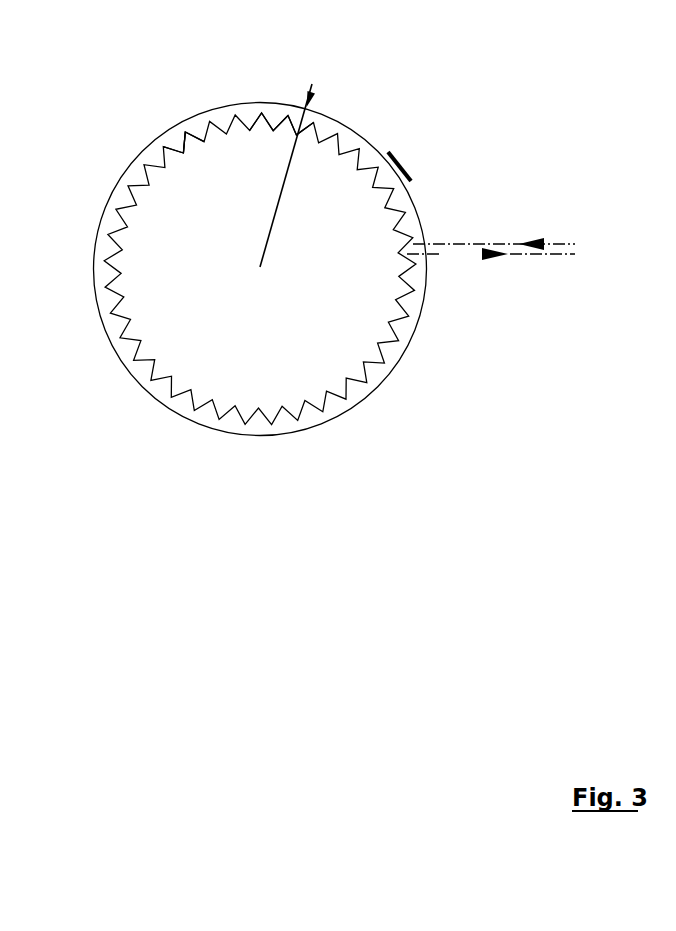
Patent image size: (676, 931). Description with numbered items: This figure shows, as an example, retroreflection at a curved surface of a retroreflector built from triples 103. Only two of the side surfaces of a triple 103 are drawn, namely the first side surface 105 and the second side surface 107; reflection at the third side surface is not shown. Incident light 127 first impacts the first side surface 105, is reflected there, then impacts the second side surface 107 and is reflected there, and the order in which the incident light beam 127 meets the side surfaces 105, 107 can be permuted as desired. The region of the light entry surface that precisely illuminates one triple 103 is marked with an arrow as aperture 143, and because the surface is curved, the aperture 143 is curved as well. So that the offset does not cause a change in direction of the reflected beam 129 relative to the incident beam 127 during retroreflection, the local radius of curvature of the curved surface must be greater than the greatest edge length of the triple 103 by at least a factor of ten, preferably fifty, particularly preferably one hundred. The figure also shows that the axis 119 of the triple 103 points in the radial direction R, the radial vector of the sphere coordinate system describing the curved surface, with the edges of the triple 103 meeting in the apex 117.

The triple 103 is at (224, 123).
The first side surface 105 is at (186, 140).
The second side surface 107 is at (176, 152).
The apex 117 is at (273, 132).
The axis 119 is at (296, 138).
The incident light 127 is at (558, 243).
The reflected beam 129 is at (457, 258).
The aperture 143 is at (401, 160).
The radial direction R is at (288, 162).